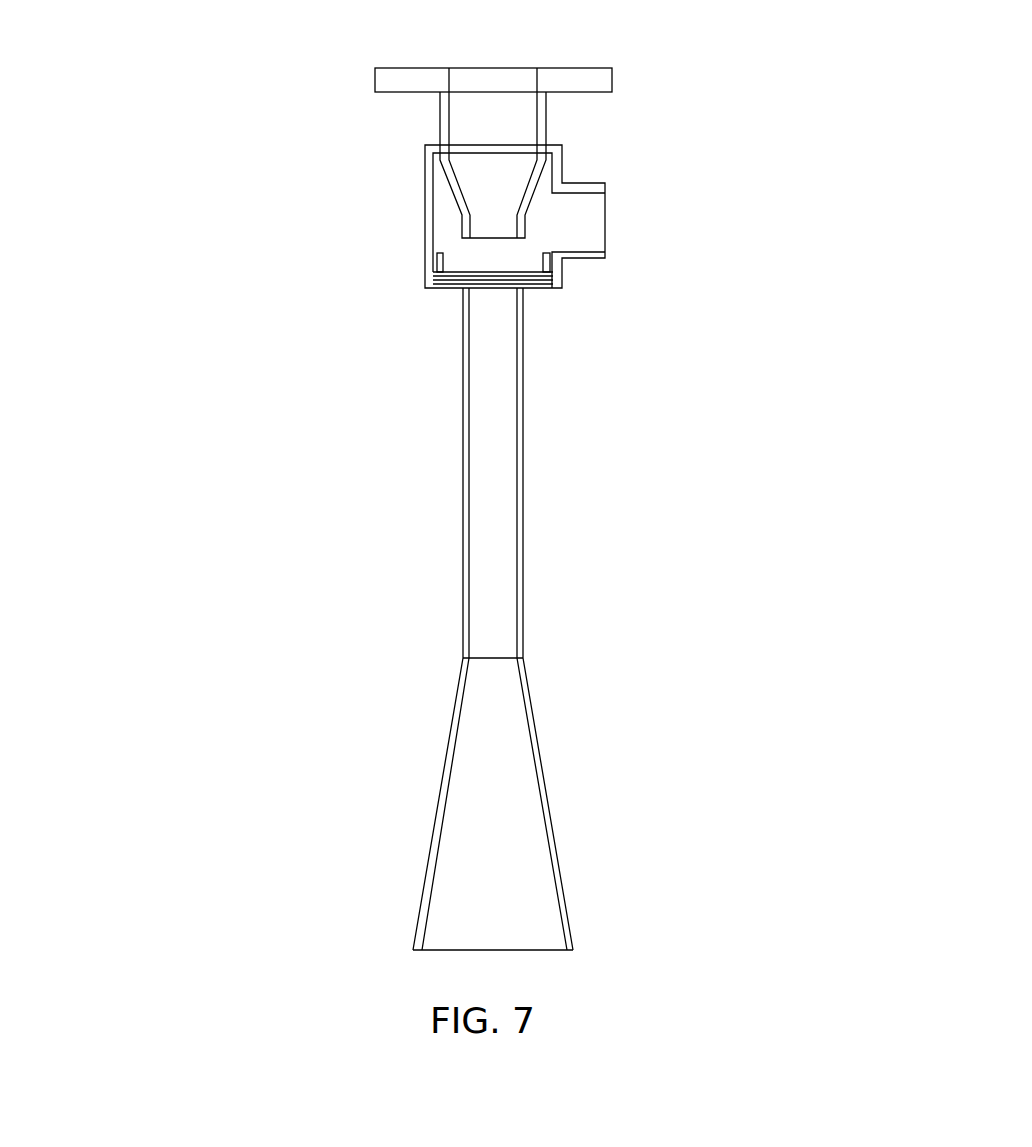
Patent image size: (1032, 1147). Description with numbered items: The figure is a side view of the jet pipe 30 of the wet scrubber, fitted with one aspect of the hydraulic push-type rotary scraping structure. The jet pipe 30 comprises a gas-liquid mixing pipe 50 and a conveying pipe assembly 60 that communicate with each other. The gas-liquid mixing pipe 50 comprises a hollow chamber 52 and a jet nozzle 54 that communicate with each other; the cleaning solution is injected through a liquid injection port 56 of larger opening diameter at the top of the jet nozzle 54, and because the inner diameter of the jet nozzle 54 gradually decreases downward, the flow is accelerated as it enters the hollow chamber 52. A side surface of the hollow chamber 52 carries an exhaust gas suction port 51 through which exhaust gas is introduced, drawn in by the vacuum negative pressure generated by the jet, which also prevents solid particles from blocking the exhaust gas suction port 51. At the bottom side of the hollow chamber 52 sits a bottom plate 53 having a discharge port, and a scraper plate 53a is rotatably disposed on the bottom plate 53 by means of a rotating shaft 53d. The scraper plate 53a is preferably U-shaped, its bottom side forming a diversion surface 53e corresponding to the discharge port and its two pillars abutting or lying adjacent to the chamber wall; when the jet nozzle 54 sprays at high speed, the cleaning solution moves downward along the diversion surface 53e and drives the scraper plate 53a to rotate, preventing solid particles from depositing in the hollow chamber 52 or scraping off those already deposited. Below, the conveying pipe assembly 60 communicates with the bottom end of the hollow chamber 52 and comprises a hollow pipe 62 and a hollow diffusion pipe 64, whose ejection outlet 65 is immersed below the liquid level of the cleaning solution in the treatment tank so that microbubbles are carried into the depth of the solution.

The jet pipe 30 is at (206, 126).
The gas-liquid mixing pipe 50 is at (207, 215).
The exhaust gas suction port 51 is at (603, 220).
The hollow chamber 52 is at (462, 282).
The bottom plate 53 is at (535, 286).
The scraper plate 53a is at (560, 266).
The rotating shaft 53d is at (515, 288).
The diversion surface 53e is at (472, 280).
The jet nozzle 54 is at (438, 118).
The liquid injection port 56 is at (537, 68).
The conveying pipe assembly 60 is at (783, 562).
The hollow pipe 62 is at (523, 550).
The hollow diffusion pipe 64 is at (537, 728).
The ejection outlet 65 is at (508, 950).